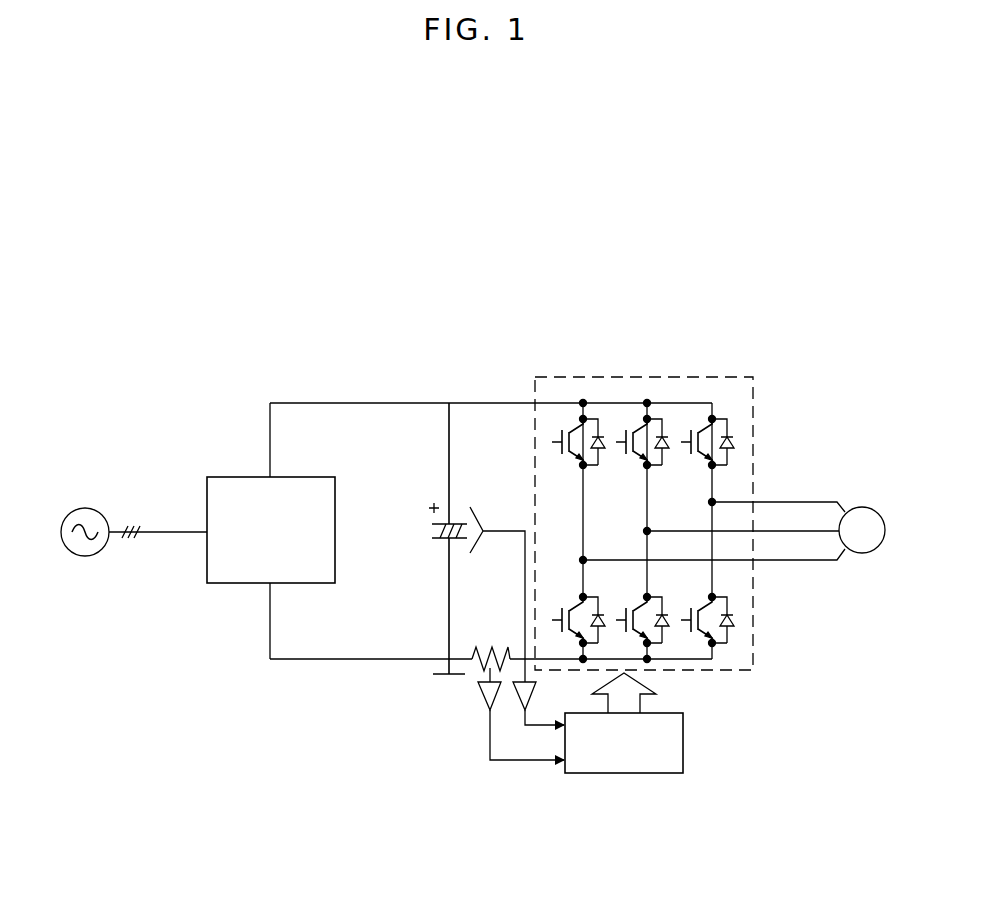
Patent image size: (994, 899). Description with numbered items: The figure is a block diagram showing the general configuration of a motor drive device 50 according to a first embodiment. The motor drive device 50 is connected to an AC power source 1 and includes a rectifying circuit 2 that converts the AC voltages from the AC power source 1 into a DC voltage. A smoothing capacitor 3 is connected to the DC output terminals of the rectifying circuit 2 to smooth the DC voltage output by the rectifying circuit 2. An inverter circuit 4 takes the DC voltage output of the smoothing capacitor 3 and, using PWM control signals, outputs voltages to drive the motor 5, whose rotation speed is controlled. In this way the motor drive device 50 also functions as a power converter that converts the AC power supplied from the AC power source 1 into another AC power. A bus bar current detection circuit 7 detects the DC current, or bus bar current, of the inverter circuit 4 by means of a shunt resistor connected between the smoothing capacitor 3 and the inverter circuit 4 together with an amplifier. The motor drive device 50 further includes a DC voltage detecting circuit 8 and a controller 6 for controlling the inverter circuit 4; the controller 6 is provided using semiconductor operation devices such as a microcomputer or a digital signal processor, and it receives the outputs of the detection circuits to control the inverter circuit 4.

The AC power source 1 is at (89, 508).
The rectifying circuit 2 is at (312, 477).
The smoothing capacitor 3 is at (440, 541).
The inverter circuit 4 is at (720, 377).
The motor 5 is at (868, 508).
The controller 6 is at (683, 745).
The bus bar current detection circuit 7 is at (483, 698).
The DC voltage detecting circuit 8 is at (534, 690).
The motor drive device 50 is at (532, 312).